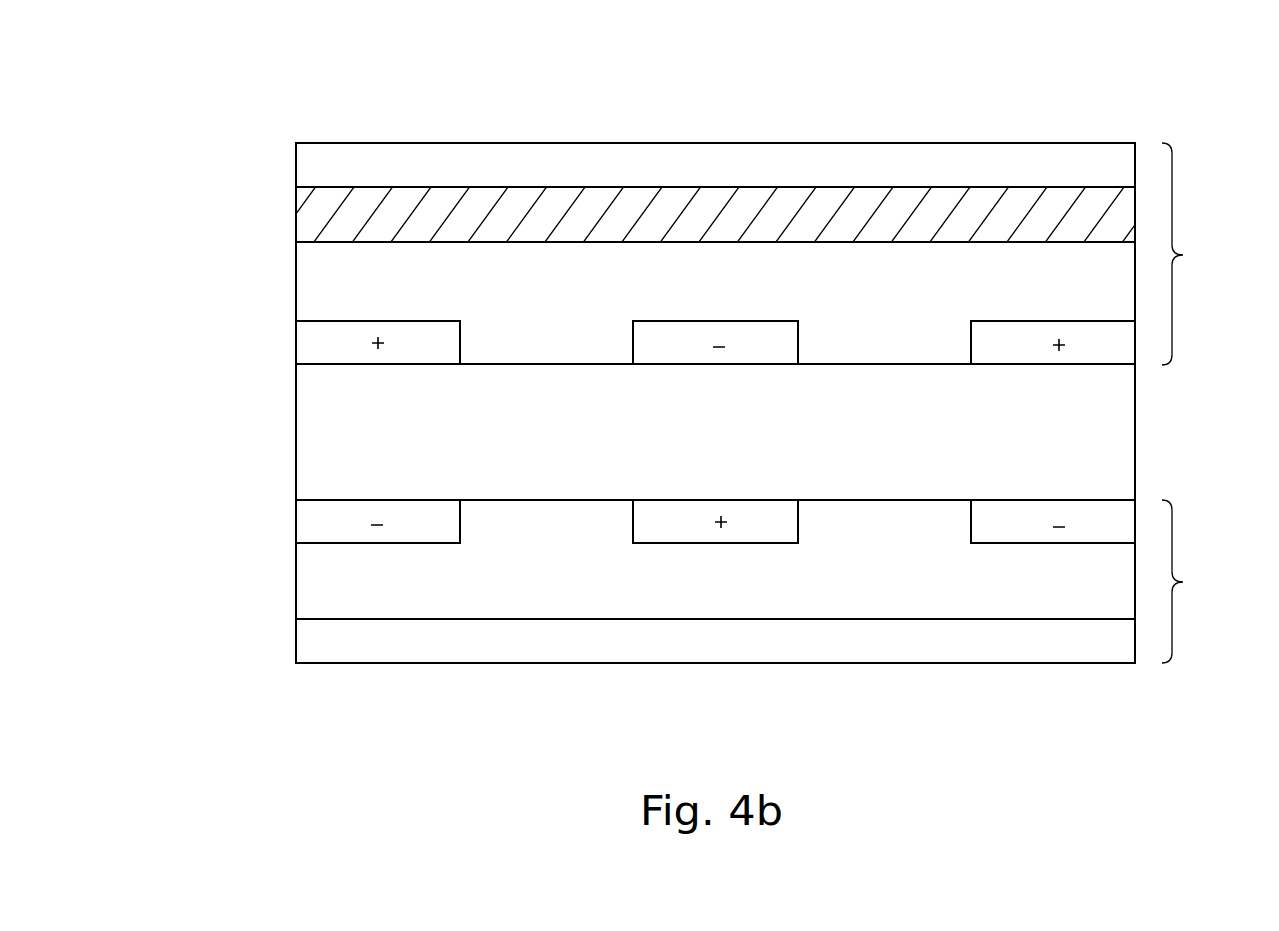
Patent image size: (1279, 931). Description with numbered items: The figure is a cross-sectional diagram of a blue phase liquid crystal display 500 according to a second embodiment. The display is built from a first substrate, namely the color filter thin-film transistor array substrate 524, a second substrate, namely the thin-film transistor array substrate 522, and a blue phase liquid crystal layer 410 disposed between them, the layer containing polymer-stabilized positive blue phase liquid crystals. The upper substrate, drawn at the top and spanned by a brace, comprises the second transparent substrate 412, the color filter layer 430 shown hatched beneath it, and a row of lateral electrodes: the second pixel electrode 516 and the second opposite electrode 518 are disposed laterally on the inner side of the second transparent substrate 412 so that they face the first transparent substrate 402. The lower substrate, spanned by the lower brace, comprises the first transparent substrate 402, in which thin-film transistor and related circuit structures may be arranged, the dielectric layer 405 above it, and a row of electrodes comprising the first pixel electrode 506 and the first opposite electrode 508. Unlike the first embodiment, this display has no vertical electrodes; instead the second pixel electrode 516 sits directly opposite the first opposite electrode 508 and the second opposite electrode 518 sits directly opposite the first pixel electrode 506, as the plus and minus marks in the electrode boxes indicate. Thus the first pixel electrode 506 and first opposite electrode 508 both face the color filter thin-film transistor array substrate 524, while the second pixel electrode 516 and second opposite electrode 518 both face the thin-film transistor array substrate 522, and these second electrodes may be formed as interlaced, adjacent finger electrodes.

The blue phase liquid crystal display 500 is at (990, 90).
The second transparent substrate 412 is at (310, 167).
The color filter layer 430 is at (310, 220).
The second opposite electrode 518 is at (310, 342).
The second pixel electrode 516 is at (754, 349).
The blue phase liquid crystal layer 410 is at (310, 441).
The first pixel electrode 506 is at (310, 523).
The first opposite electrode 508 is at (766, 530).
The dielectric layer 405 is at (310, 585).
The first transparent substrate 402 is at (310, 645).
The color filter thin-film transistor array substrate 524 is at (1197, 254).
The thin-film transistor array substrate 522 is at (1197, 581).